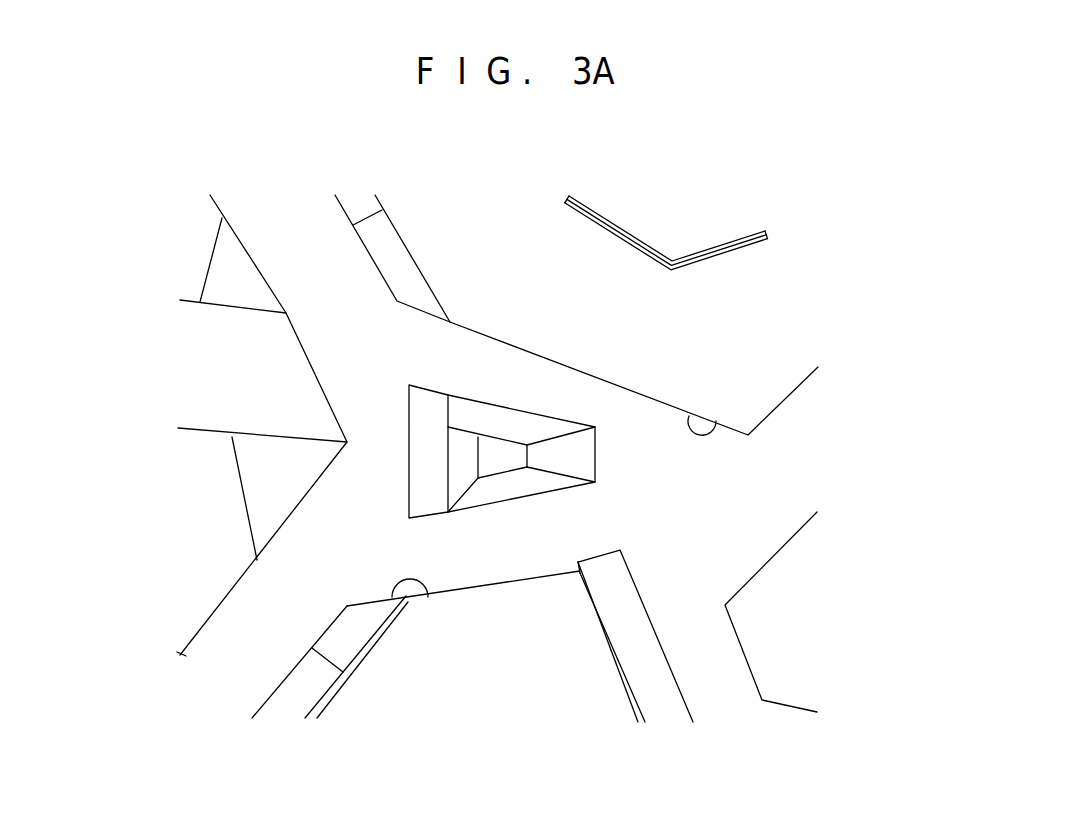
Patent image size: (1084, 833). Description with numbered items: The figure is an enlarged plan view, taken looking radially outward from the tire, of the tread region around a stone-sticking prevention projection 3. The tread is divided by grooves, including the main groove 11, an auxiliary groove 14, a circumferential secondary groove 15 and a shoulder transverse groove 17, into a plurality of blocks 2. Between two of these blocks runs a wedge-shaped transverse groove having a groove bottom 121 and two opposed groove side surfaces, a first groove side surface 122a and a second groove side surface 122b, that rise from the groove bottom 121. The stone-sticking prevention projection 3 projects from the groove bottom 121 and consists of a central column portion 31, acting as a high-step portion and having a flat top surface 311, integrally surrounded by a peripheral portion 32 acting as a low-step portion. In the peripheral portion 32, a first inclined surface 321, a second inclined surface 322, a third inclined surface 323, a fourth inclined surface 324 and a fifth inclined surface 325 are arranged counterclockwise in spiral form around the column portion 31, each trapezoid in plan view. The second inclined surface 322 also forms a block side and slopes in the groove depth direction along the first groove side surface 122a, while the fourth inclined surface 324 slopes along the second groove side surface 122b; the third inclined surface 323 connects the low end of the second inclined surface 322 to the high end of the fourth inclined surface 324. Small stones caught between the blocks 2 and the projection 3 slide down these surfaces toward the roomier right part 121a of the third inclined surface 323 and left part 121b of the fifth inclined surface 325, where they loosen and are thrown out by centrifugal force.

The block 2 is at (457, 457).
The stone-sticking prevention projection 3 is at (673, 158).
The main groove 11 is at (228, 661).
The auxiliary groove 14 is at (705, 663).
The circumferential secondary groove 15 is at (785, 494).
The shoulder transverse groove 17 is at (233, 367).
The column portion 31 is at (512, 450).
The peripheral portion 32 is at (560, 450).
The groove bottom 121 is at (515, 553).
The right part of the third inclined surface 121a is at (680, 513).
The left part of the fifth inclined surface 121b is at (347, 360).
The first groove side surface 122a is at (400, 598).
The second groove side surface 122b is at (716, 430).
The top surface 311 is at (498, 450).
The first inclined surface 321 is at (458, 468).
The second inclined surface 322 is at (527, 483).
The third inclined surface 323 is at (585, 455).
The fourth inclined surface 324 is at (477, 413).
The fifth inclined surface 325 is at (428, 427).